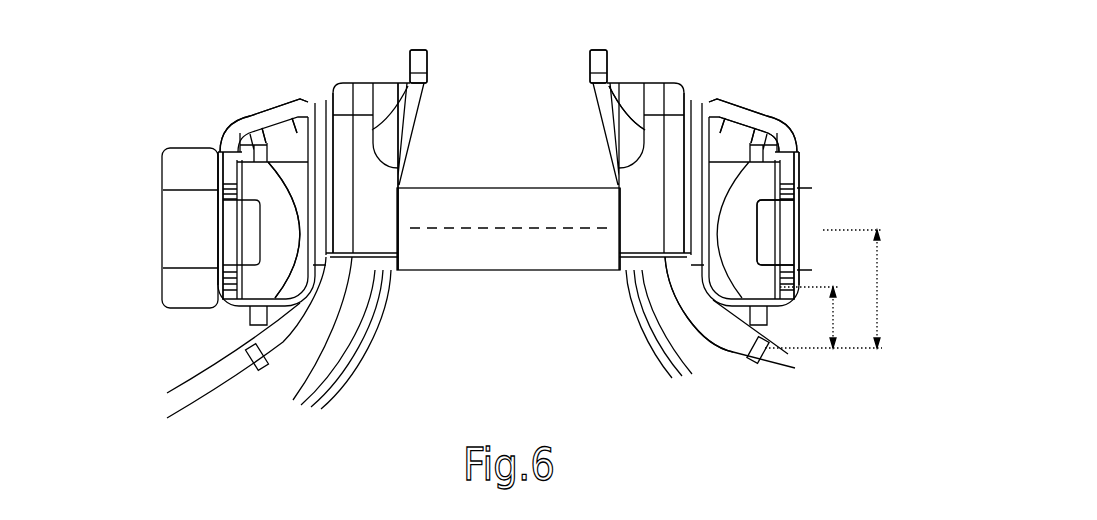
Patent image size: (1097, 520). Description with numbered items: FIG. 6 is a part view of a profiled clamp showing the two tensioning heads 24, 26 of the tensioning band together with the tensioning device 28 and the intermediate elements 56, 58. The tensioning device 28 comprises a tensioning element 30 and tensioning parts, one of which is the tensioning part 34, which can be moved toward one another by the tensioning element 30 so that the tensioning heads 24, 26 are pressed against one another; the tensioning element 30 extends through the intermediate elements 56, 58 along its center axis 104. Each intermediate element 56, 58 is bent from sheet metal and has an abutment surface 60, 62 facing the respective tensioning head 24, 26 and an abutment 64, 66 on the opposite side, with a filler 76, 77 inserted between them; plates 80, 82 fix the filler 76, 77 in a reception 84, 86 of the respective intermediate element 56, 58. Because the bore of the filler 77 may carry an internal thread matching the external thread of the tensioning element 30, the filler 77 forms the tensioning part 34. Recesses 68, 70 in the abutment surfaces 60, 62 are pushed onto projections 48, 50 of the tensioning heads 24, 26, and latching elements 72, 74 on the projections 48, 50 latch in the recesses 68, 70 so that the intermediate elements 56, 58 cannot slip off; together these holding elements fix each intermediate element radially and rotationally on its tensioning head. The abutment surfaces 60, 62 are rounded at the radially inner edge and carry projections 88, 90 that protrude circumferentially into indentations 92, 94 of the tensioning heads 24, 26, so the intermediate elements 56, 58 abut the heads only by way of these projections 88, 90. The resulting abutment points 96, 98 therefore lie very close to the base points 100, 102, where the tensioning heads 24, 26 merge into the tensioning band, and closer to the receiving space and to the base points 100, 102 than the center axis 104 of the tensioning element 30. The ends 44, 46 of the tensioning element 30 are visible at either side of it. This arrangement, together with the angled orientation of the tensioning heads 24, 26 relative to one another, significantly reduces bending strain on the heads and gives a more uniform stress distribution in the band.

The tensioning head 24 is at (365, 83).
The tensioning head 26 is at (640, 83).
The tensioning device 28 is at (792, 94).
The tensioning element 30 is at (492, 200).
The tensioning part 34 is at (793, 143).
The first end of web 44 is at (402, 238).
The second end of web 46 is at (617, 222).
The projection 48 is at (296, 145).
The projection 50 is at (740, 130).
The intermediate element 56 is at (230, 316).
The intermediate element 58 is at (797, 318).
The abutment surface 60 is at (400, 190).
The abutment surface 62 is at (703, 182).
The abutment 64 is at (213, 293).
The abutment 66 is at (800, 282).
The recess 68 is at (336, 148).
The recess 70 is at (625, 140).
The latching element 72 is at (282, 130).
The latching element 74 is at (718, 130).
The filler 76 is at (272, 178).
The filler 77 is at (800, 183).
The plate 80 is at (227, 213).
The plate 82 is at (780, 234).
The reception 84 is at (258, 295).
The reception 86 is at (742, 328).
The projection 88 is at (302, 312).
The projection 90 is at (695, 345).
The indentation 92 is at (345, 343).
The indentation 94 is at (700, 350).
The abutment point 96 is at (313, 293).
The abutment point 98 is at (673, 312).
The base point 100 is at (318, 372).
The base point 102 is at (668, 345).
The center axis 104 is at (488, 200).